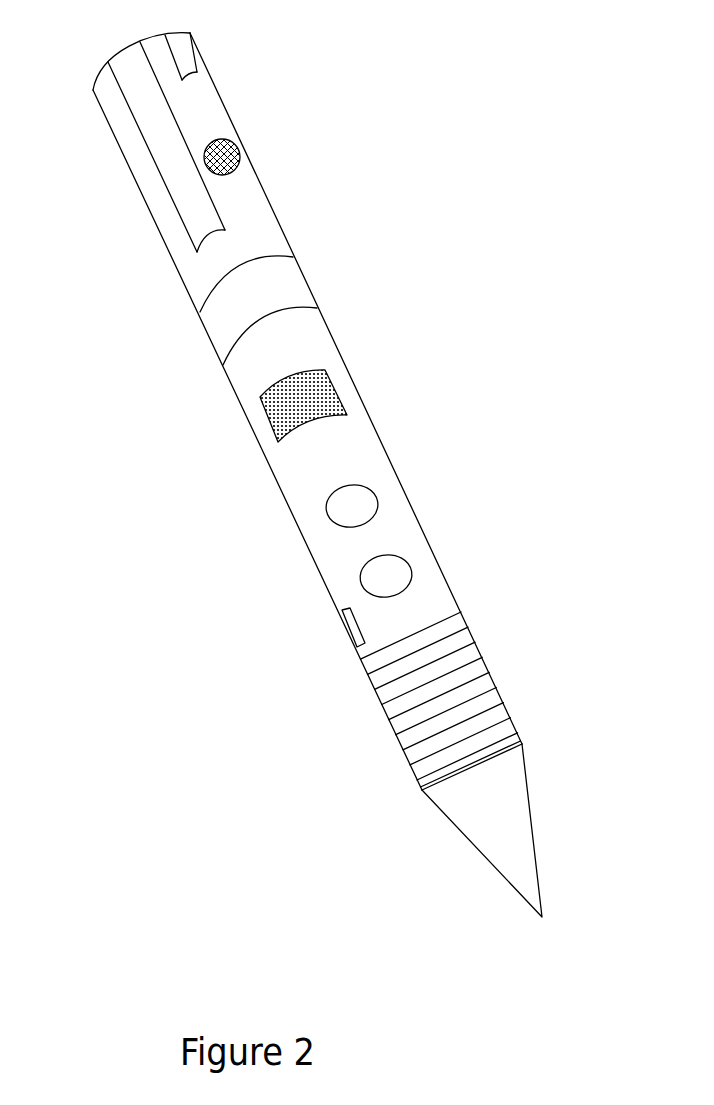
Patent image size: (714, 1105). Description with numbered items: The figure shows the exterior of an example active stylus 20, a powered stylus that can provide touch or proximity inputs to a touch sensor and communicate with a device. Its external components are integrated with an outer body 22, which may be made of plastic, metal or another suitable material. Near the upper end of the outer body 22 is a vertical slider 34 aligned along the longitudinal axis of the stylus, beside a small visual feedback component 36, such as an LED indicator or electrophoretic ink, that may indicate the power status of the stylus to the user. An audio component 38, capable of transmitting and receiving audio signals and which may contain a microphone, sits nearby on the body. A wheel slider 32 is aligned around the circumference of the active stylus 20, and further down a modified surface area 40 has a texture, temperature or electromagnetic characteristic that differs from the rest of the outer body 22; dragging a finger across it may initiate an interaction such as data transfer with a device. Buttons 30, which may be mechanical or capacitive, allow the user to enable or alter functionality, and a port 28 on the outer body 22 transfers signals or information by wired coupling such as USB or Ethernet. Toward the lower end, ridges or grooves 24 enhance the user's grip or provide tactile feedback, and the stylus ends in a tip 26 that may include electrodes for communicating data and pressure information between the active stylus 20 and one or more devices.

The active stylus 20 is at (342, 475).
The outer body 22 is at (302, 411).
The ridges or grooves 24 is at (463, 660).
The tip 26 is at (530, 821).
The port 28 is at (357, 640).
The button 30 is at (343, 512).
The wheel slider 32 is at (225, 323).
The vertical slider 34 is at (157, 132).
The visual feedback component 36 is at (175, 54).
The audio component 38 is at (237, 146).
The modified surface area 40 is at (306, 394).